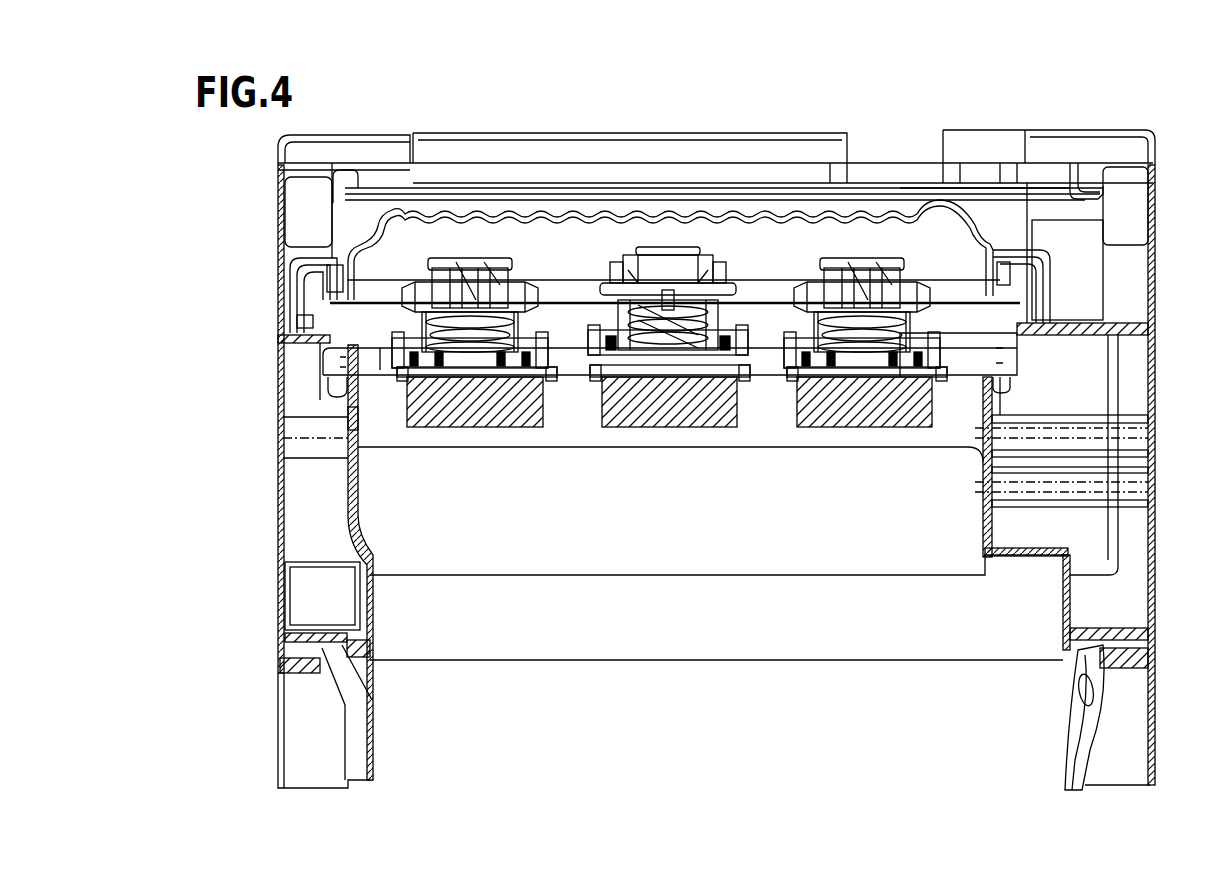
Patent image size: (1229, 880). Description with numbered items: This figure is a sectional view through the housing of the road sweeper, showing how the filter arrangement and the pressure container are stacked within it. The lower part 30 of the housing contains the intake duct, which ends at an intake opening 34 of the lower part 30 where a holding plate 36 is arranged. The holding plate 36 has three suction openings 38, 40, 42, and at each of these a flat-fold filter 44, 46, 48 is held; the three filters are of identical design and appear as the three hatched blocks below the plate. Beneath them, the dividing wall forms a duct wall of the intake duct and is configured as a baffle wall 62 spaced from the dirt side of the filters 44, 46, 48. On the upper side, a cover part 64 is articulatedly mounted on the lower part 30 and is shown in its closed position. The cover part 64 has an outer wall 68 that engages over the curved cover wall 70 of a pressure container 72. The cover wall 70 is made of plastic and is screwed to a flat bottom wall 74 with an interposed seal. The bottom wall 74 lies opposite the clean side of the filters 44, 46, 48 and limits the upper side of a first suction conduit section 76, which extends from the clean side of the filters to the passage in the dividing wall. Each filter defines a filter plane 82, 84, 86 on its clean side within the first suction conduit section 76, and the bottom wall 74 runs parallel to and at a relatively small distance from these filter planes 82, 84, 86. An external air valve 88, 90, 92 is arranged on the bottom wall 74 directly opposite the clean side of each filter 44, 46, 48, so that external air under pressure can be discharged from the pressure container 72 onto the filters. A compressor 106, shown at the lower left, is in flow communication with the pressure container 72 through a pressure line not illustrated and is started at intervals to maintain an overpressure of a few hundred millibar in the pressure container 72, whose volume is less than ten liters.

The lower part of the housing 30 is at (266, 362).
The intake opening 34 is at (350, 393).
The holding plate 36 is at (323, 363).
The suction opening 38 is at (403, 380).
The suction opening 40 is at (603, 380).
The suction opening 42 is at (800, 378).
The flat-fold filter 44 is at (475, 408).
The flat-fold filter 46 is at (682, 408).
The flat-fold filter 48 is at (877, 408).
The baffle wall 62 is at (650, 553).
The cover part 64 is at (268, 258).
The outer wall 68 is at (472, 192).
The cover wall 70 is at (548, 200).
The pressure container 72 is at (357, 205).
The bottom wall 74 is at (322, 325).
The first suction conduit section 76 is at (992, 316).
The filter plane 82 is at (510, 378).
The filter plane 84 is at (717, 377).
The filter plane 86 is at (920, 375).
The external air valve 88 is at (450, 236).
The external air valve 90 is at (685, 226).
The external air valve 92 is at (895, 236).
The compressor 106 is at (303, 603).